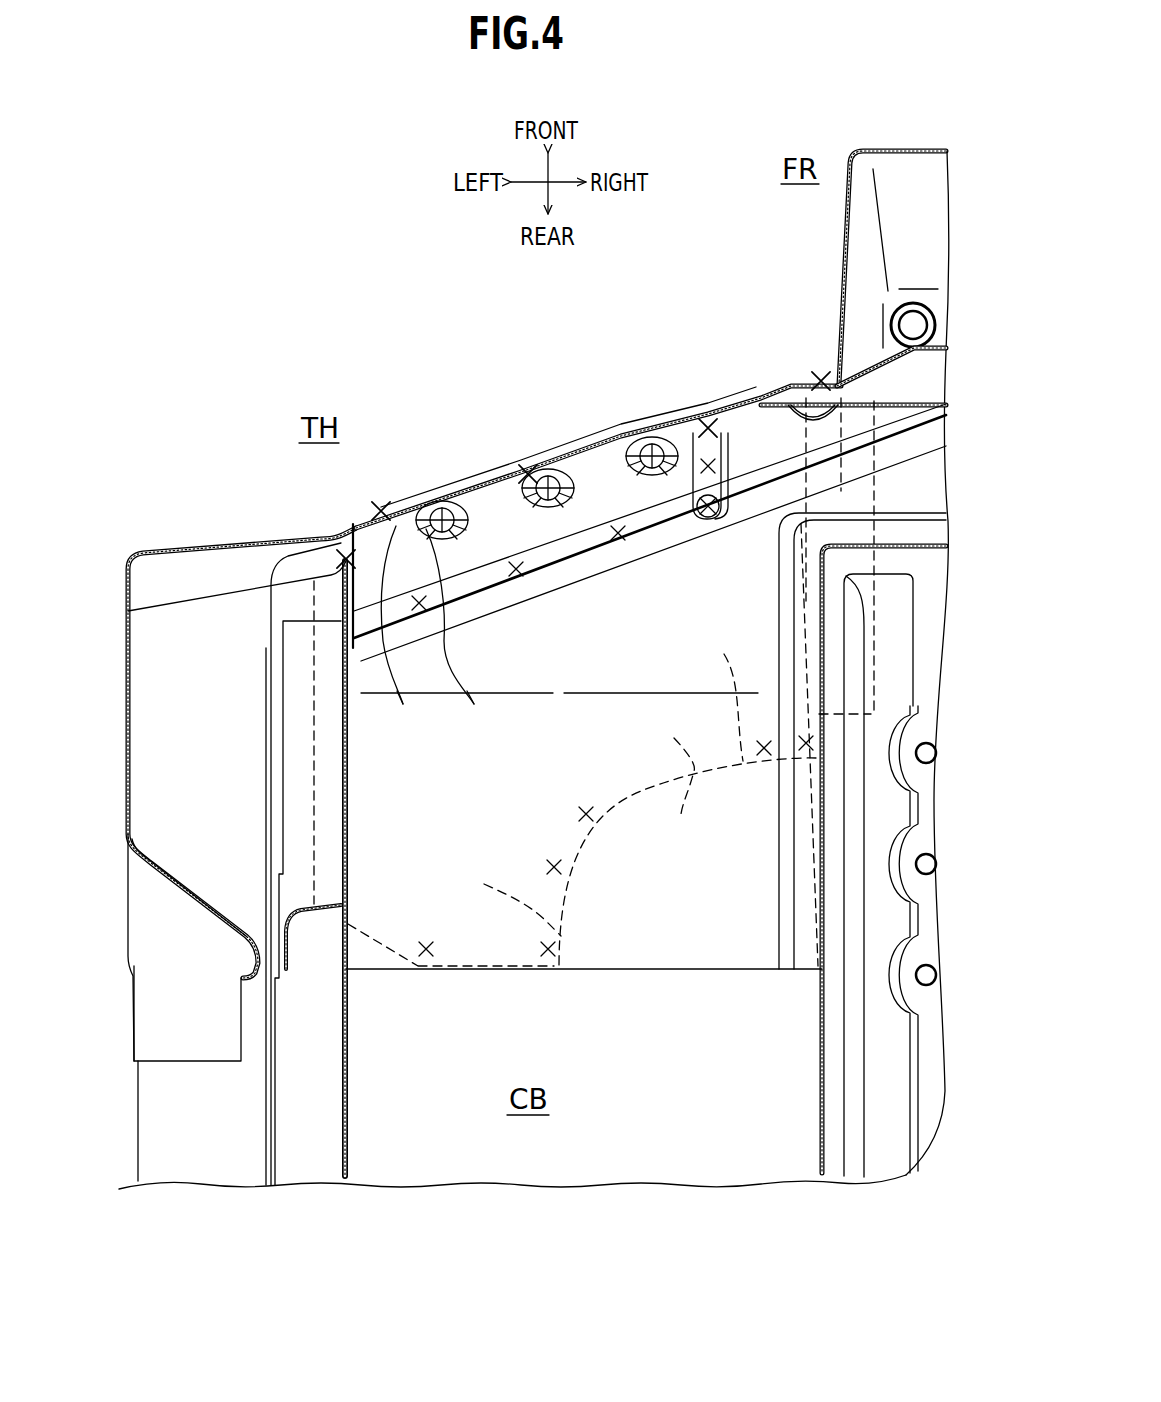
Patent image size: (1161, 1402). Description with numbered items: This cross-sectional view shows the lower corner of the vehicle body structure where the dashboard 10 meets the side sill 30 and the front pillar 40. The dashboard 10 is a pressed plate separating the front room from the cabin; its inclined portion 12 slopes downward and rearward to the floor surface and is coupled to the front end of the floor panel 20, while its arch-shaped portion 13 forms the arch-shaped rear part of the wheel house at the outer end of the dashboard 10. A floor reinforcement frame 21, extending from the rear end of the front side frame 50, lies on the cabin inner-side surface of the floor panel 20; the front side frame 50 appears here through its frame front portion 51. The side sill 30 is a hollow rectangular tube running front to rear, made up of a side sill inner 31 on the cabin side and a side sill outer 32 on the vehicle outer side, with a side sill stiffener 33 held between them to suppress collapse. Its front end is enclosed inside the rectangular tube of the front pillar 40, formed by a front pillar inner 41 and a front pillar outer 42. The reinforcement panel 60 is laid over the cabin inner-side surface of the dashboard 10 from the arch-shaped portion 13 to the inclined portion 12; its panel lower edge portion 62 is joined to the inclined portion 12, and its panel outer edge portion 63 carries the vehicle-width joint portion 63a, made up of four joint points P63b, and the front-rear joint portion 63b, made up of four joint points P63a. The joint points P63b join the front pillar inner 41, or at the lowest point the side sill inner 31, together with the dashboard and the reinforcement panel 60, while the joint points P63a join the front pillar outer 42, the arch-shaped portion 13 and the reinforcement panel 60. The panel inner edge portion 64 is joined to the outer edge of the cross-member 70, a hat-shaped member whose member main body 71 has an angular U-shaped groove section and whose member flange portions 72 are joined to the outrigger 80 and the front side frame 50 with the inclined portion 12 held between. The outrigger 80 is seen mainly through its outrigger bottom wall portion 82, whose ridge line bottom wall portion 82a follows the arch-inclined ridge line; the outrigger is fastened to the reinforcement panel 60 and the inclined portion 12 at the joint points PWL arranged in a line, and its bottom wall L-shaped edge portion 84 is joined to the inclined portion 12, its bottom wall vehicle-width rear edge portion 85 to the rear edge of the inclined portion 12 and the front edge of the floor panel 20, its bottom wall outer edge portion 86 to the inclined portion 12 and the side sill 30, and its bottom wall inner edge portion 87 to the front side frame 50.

The dashboard 10 is at (598, 438).
The inclined portion 12 is at (584, 984).
The arch-shaped portion 13 is at (568, 447).
The floor panel 20 is at (532, 892).
The floor reinforcement frame 21 is at (890, 918).
The side sill 30 is at (96, 1121).
The side sill inner 31 is at (303, 900).
The side sill outer 32 is at (172, 1112).
The side sill stiffener 33 is at (237, 596).
The front pillar 40 is at (242, 758).
The front pillar inner 41 is at (315, 868).
The front pillar outer 42 is at (165, 887).
The front side frame 50 is at (900, 629).
The frame front portion 51 is at (891, 235).
The reinforcement panel 60 is at (488, 586).
The panel lower edge portion 62 is at (465, 615).
The panel outer edge portion 63 is at (559, 734).
The vehicle-width joint portion 63a is at (404, 715).
The front-rear joint portion 63b is at (474, 715).
The panel inner edge portion 64 is at (707, 518).
The cross-member 70 is at (650, 532).
The member main body 71 is at (841, 531).
The member flange portions 72 is at (753, 530).
The outrigger 80 is at (681, 851).
The outrigger bottom wall portion 82 is at (549, 921).
The ridge line bottom wall portion 82a is at (795, 745).
The bottom wall L-shaped edge portion 84 is at (666, 777).
The bottom wall vehicle-width rear edge portion 85 is at (451, 982).
The bottom wall outer edge portion 86 is at (263, 742).
The bottom wall inner edge portion 87 is at (926, 677).
The joint points P63a is at (305, 525).
The joint points P63b is at (363, 486).
The joint points PWL is at (623, 423).